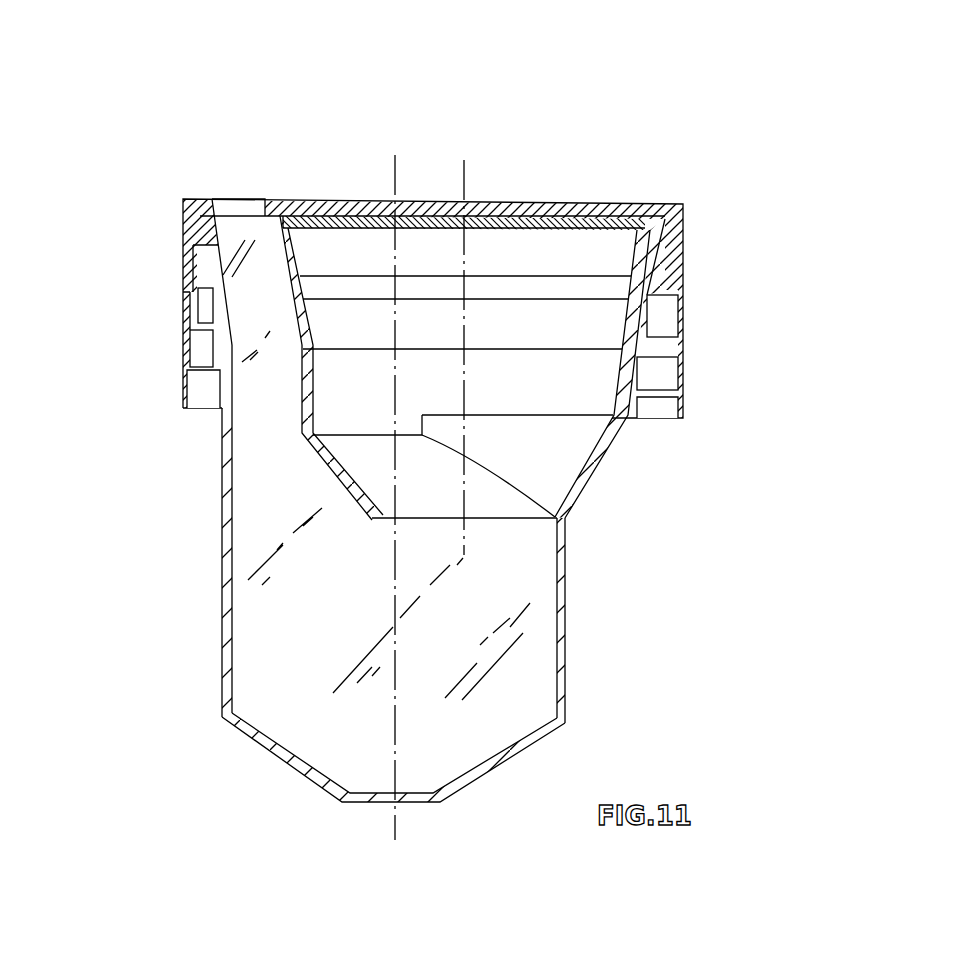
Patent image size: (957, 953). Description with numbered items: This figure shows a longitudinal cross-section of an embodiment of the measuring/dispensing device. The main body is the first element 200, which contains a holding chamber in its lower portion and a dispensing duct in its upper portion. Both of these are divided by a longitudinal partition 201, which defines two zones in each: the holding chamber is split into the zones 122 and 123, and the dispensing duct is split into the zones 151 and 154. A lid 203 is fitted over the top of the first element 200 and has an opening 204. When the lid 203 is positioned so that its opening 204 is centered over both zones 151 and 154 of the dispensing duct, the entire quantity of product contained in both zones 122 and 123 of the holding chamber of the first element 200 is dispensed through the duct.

The lid 203 is at (683, 222).
The opening 204 is at (230, 205).
The second zone of the dispensing duct 154 is at (263, 392).
The first zone of the dispensing duct 151 is at (252, 321).
The first element 200 is at (446, 573).
The first zone of the holding chamber 122 is at (280, 692).
The second zone of the holding chamber 123 is at (327, 735).
The longitudinal partition 201 is at (525, 690).